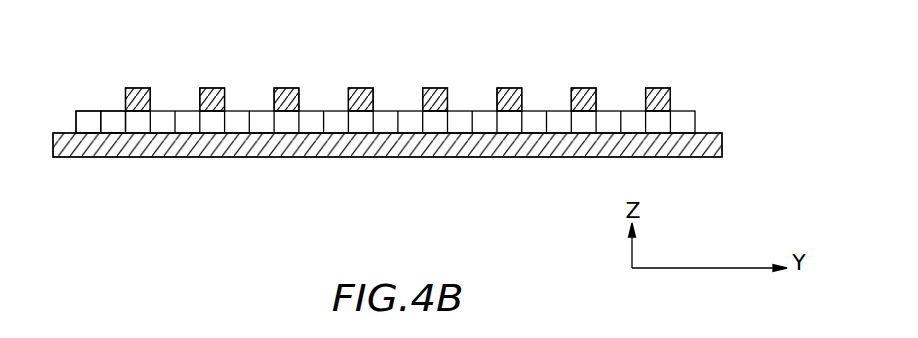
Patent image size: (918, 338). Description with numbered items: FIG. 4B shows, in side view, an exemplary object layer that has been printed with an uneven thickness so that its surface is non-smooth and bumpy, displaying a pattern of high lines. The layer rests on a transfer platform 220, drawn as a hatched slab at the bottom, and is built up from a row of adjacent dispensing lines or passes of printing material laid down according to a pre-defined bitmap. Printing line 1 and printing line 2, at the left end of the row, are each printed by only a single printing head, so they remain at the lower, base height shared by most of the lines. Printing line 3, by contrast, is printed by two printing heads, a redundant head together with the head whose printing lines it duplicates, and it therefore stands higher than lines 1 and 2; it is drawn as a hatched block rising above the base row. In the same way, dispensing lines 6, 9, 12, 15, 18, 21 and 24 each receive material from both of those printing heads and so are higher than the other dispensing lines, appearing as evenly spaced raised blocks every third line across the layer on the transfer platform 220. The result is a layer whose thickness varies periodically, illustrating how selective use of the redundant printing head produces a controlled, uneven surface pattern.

The printing line 1 is at (90, 110).
The printing line 2 is at (115, 110).
The printing line 3 is at (138, 88).
The dispensing line 6 is at (212, 88).
The dispensing line 9 is at (286, 88).
The dispensing line 12 is at (360, 88).
The dispensing line 15 is at (435, 88).
The dispensing line 18 is at (509, 88).
The dispensing line 21 is at (583, 88).
The dispensing line 24 is at (658, 88).
The transfer platform 220 is at (714, 143).